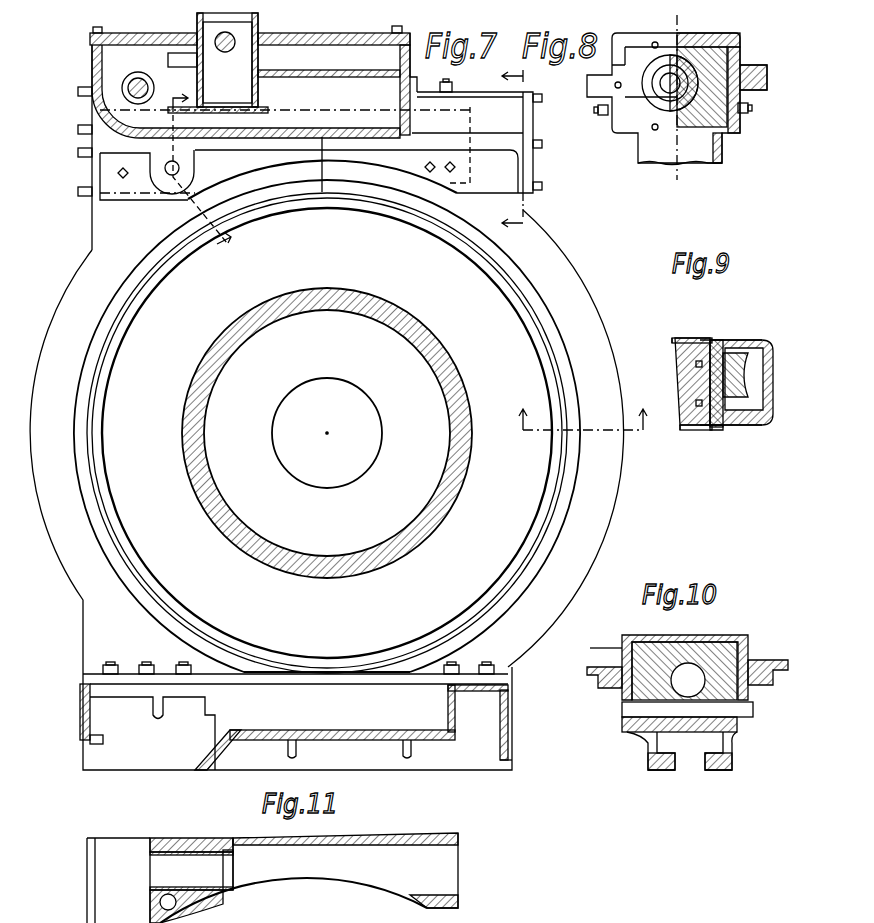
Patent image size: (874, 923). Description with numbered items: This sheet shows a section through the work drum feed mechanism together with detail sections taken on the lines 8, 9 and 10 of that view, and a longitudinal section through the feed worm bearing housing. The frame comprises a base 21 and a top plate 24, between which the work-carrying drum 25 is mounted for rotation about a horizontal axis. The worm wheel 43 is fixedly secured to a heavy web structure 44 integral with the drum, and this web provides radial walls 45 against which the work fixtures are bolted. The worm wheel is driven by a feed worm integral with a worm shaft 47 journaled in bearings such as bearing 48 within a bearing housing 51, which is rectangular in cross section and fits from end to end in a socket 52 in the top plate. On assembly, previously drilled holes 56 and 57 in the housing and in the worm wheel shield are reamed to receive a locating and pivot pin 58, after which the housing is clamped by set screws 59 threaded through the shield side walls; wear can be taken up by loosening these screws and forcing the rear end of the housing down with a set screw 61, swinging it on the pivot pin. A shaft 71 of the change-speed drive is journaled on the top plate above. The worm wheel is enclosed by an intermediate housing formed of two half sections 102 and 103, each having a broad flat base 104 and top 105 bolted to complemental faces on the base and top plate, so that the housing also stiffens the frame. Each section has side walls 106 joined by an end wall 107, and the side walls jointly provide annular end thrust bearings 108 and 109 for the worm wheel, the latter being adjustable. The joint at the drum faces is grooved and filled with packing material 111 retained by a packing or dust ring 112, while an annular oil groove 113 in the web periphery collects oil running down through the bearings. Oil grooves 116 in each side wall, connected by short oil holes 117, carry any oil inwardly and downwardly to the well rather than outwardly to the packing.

In FIG. 7, the section line 8— 8 is at (520, 156).
In FIG. 7, the section line 9— 9 is at (579, 431).
In FIG. 7, the section line 10— 10 is at (194, 172).
In FIG. 7, the base 21 is at (80, 717).
In FIG. 7, the top plate 24 is at (92, 66).
In FIG. 10, the top plate 24 is at (590, 649).
In FIG. 7, the work-carrying drum 25 is at (455, 364).
In FIG. 9, the worm wheel 43 is at (741, 373).
In FIG. 9, the web structure 44 is at (690, 387).
In FIG. 7, the radial walls 45 is at (150, 458).
In FIG. 8, the worm shaft 47 is at (667, 88).
In FIG. 11, the bearing 48 is at (176, 850).
In FIG. 7, the bearing housing 51 is at (471, 108).
In FIG. 8, the bearing housing 51 is at (722, 58).
In FIG. 10, the bearing housing 51 is at (730, 665).
In FIG. 11, the bearing housing 51 is at (440, 836).
In FIG. 10, the socket 52 is at (712, 642).
In FIG. 10, the hole 56 is at (640, 736).
In FIG. 7, the hole 57 is at (168, 182).
In FIG. 7, the locating and pivot pin 58 is at (180, 168).
In FIG. 10, the locating and pivot pin 58 is at (745, 709).
In FIG. 7, the set screws 59 is at (450, 161).
In FIG. 8, the set screws 59 is at (598, 112).
In FIG. 7, the set screw 61 is at (446, 80).
In FIG. 7, the shaft 71 is at (237, 38).
In FIG. 7, the intermediate housing section 102 is at (76, 297).
In FIG. 10, the intermediate housing section 102 is at (736, 746).
In FIG. 7, the intermediate housing section 103 is at (560, 256).
In FIG. 8, the intermediate housing section 103 is at (727, 153).
In FIG. 7, the base 104 is at (124, 676).
In FIG. 7, the top 105 is at (272, 152).
In FIG. 9, the side walls 106 is at (738, 339).
In FIG. 9, the end wall 107 is at (773, 381).
In FIG. 9, the end thrust bearing 108 is at (716, 431).
In FIG. 10, the end thrust bearing 108 is at (676, 771).
In FIG. 9, the end thrust bearing 109 is at (716, 345).
In FIG. 10, the end thrust bearing 109 is at (705, 771).
In FIG. 9, the packing material 111 is at (707, 338).
In FIG. 7, the packing or dust ring 112 is at (95, 453).
In FIG. 9, the packing or dust ring 112 is at (690, 338).
In FIG. 9, the annular oil groove 113 is at (696, 405).
In FIG. 9, the oil grooves 116 is at (690, 351).
In FIG. 9, the oil holes 117 is at (690, 358).